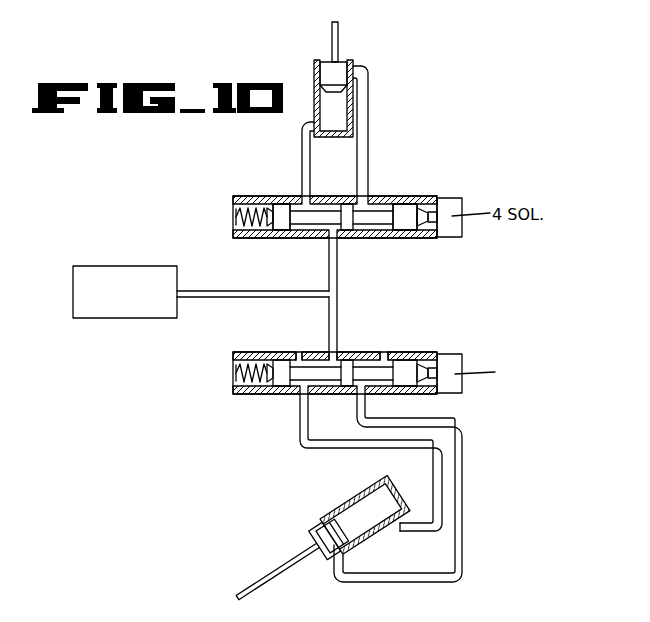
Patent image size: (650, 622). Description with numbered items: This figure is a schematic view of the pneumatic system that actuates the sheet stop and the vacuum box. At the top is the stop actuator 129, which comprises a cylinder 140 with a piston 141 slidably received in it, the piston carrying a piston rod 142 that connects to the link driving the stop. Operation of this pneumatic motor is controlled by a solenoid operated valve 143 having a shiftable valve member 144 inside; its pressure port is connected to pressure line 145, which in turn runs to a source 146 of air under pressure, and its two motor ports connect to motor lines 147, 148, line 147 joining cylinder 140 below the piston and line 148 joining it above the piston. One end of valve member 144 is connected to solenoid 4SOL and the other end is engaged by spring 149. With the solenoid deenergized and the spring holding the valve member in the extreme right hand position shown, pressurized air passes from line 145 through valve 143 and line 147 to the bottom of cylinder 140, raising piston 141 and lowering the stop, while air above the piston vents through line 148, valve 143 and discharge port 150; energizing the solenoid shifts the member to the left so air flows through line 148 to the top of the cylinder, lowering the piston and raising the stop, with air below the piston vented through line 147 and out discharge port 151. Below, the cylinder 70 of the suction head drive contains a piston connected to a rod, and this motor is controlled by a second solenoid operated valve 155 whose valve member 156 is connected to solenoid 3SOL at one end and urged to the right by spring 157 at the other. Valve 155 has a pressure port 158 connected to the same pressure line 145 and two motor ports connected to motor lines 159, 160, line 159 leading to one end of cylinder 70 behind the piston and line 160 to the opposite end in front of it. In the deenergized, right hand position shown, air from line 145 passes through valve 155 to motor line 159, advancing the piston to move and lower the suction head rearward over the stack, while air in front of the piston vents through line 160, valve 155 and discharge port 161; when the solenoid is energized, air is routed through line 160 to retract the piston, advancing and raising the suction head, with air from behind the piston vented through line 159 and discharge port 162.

The stop actuator 129 is at (326, 76).
The cylinder 140 is at (348, 100).
The piston 141 is at (343, 62).
The piston rod 142 is at (338, 36).
The solenoid operated valve 143 is at (393, 205).
The valve member 144 is at (290, 205).
The pressure line 145 is at (337, 294).
The source of air under pressure 146 is at (125, 292).
The motor line 147 is at (302, 138).
The motor line 148 is at (369, 125).
The spring 149 is at (244, 212).
The discharge port 150 is at (392, 238).
The discharge port 151 is at (290, 238).
The solenoid operated valve 155 is at (357, 365).
The valve member 156 is at (288, 386).
The spring 157 is at (237, 363).
The pressure port 158 is at (334, 352).
The motor line 159 is at (300, 429).
The motor line 160 is at (463, 446).
The discharge port 161 is at (384, 352).
The discharge port 162 is at (299, 352).
The cylinder 70 is at (318, 545).